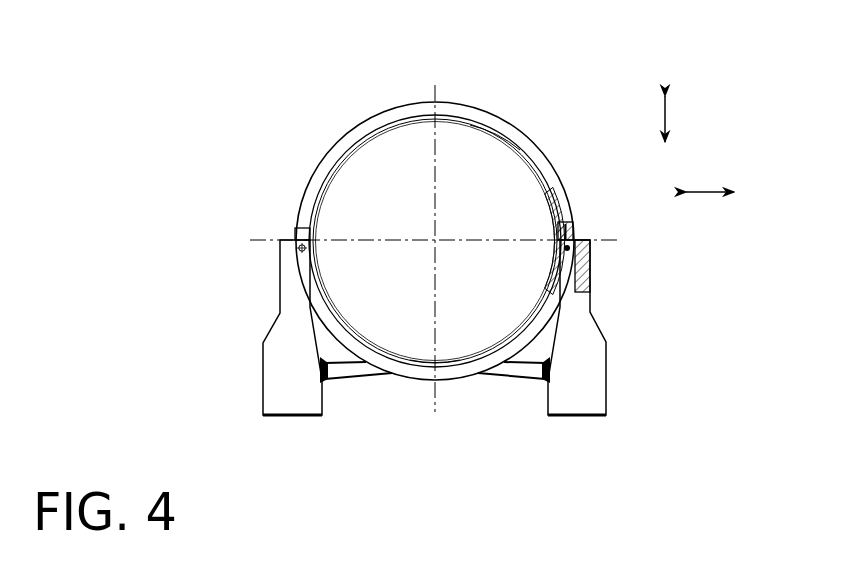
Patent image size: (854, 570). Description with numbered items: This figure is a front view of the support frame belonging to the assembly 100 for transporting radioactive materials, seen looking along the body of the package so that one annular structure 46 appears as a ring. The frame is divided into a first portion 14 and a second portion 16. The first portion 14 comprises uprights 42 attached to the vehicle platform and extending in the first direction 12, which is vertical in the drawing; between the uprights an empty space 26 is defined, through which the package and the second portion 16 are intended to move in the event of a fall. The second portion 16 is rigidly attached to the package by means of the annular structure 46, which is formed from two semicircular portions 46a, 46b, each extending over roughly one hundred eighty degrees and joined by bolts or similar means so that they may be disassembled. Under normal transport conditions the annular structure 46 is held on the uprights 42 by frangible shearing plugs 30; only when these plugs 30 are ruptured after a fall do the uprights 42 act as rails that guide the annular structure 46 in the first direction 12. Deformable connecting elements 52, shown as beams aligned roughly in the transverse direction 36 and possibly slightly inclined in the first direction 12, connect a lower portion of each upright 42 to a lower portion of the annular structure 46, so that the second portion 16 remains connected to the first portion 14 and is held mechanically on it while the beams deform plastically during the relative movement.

The assembly 100 is at (231, 86).
The second portion 16 is at (389, 102).
The annular structure 46 is at (481, 132).
The semicircular portion 46a is at (497, 127).
The semicircular portion 46b is at (458, 372).
The first portion 14 is at (616, 354).
The upright 42 is at (280, 390).
The empty space 26 is at (420, 411).
The deformable connecting element 52 is at (347, 376).
The frangible shearing plug 30 is at (300, 249).
The first direction 12 is at (666, 118).
The transverse direction 36 is at (712, 195).